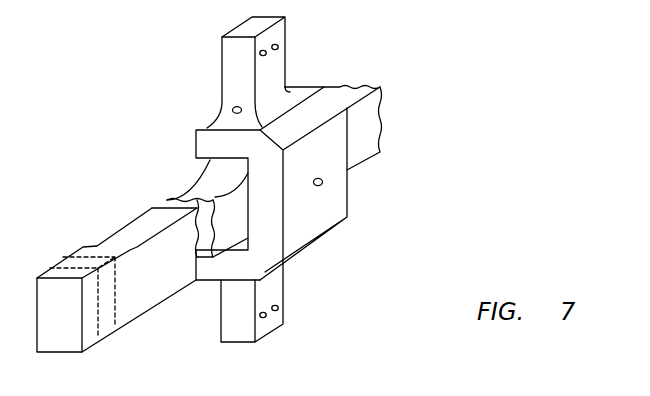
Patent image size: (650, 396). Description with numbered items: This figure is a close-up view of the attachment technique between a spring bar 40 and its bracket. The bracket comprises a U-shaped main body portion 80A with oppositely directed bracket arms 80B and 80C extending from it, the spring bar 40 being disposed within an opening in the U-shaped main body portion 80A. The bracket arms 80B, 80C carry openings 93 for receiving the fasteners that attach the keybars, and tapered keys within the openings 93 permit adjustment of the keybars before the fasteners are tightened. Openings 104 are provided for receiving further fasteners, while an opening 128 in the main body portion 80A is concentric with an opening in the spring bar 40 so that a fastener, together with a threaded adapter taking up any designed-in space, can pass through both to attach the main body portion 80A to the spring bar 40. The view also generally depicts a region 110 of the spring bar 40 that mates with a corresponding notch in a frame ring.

The spring bar 40 is at (142, 230).
The U-shaped main body portion 80A is at (317, 220).
The bracket arm 80B is at (235, 330).
The bracket arm 80C is at (235, 70).
The openings 93 is at (266, 55).
The openings 104 is at (232, 108).
The region 110 is at (108, 307).
The opening 128 is at (323, 183).